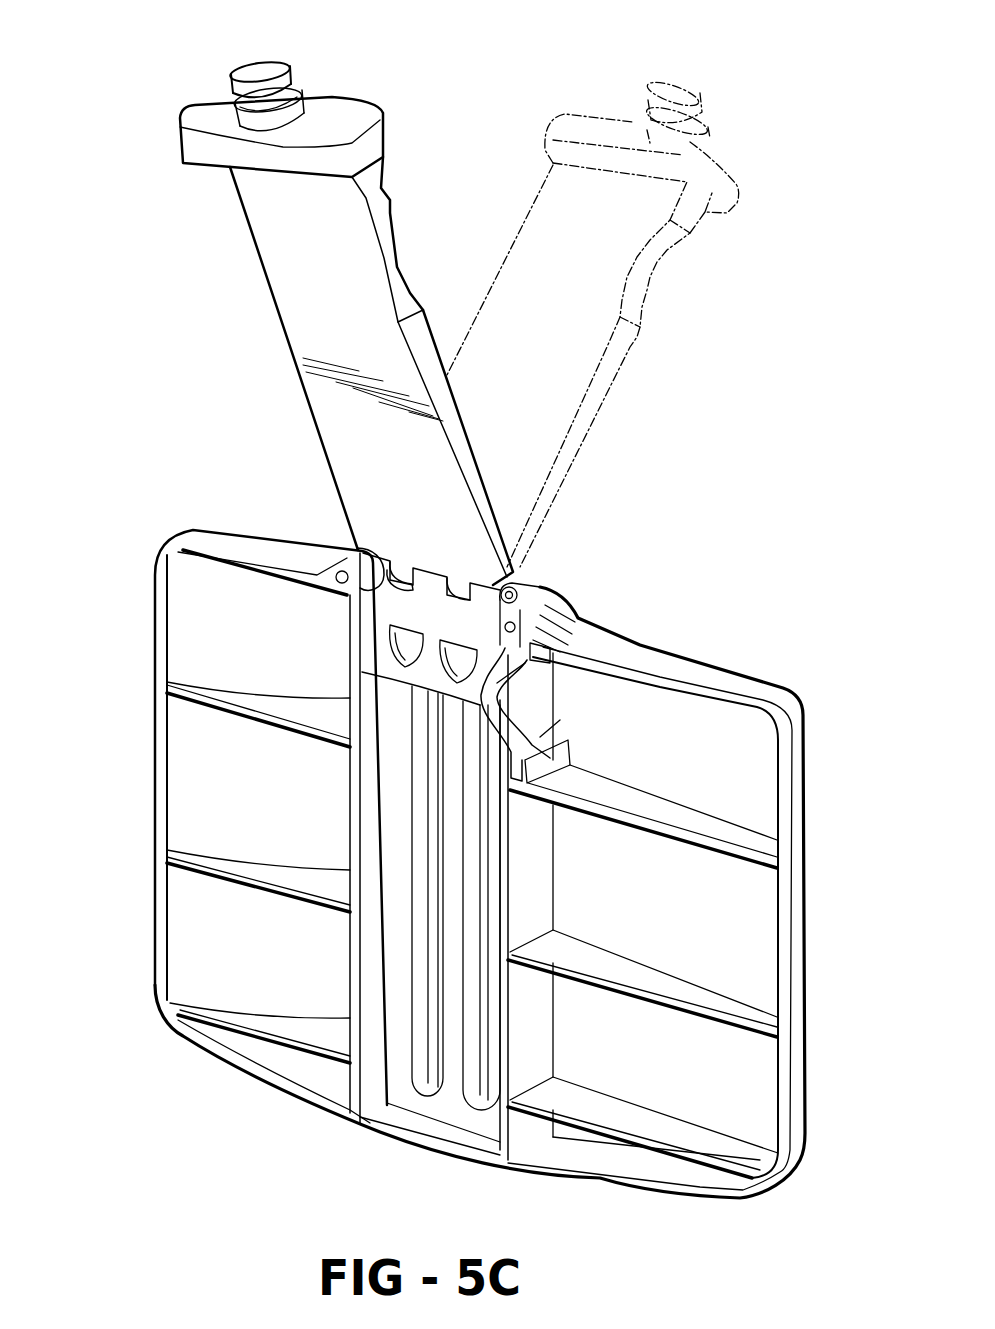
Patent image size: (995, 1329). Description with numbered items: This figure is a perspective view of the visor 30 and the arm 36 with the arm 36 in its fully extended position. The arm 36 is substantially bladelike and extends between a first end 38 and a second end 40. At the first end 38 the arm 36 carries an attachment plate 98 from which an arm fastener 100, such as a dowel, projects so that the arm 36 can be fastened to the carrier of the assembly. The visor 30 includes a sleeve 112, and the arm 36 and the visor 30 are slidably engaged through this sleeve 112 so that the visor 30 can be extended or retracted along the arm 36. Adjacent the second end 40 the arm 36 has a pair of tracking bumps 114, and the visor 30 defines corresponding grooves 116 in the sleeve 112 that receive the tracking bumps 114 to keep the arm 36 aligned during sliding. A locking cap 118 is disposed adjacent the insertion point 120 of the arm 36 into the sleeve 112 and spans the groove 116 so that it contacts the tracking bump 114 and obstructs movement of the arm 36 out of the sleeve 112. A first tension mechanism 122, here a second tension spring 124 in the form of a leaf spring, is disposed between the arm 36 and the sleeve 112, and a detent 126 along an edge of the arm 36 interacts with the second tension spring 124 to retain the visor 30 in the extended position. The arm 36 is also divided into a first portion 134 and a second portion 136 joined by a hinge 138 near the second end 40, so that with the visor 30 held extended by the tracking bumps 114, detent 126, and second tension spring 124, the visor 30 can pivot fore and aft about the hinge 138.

The visor 30 is at (797, 947).
The arm 36 is at (262, 213).
The first end 38 is at (350, 197).
The second end 40 is at (383, 675).
The attachment plate 98 is at (178, 143).
The arm fastener 100 is at (297, 80).
The sleeve 112 is at (367, 1072).
The tracking bump 114 is at (403, 650).
The groove 116 is at (483, 1073).
The locking cap 118 is at (530, 597).
The insertion point 120 is at (360, 555).
The first tension mechanism 122 is at (478, 697).
The second tension spring 124 is at (543, 740).
The detent 126 is at (398, 290).
The first portion 134 is at (428, 465).
The second portion 136 is at (458, 612).
The hinge 138 is at (410, 567).